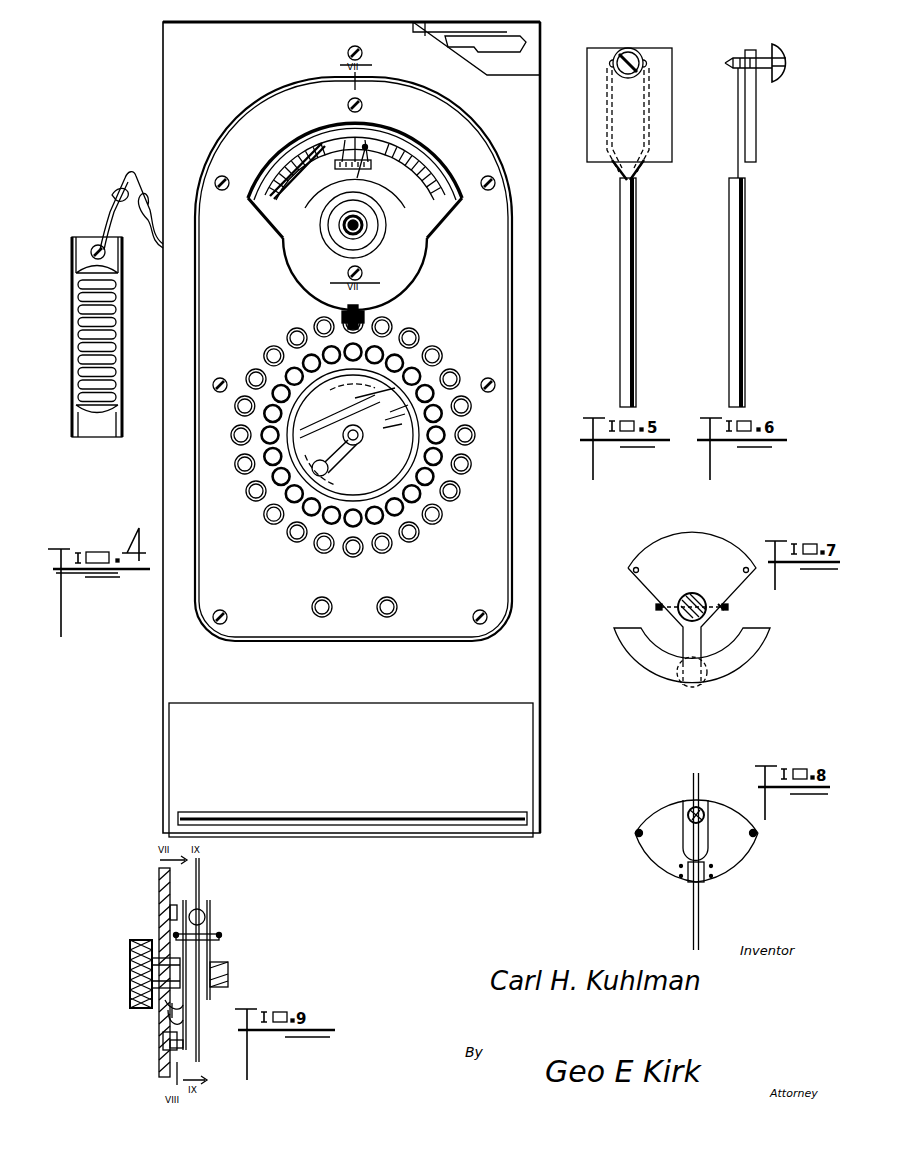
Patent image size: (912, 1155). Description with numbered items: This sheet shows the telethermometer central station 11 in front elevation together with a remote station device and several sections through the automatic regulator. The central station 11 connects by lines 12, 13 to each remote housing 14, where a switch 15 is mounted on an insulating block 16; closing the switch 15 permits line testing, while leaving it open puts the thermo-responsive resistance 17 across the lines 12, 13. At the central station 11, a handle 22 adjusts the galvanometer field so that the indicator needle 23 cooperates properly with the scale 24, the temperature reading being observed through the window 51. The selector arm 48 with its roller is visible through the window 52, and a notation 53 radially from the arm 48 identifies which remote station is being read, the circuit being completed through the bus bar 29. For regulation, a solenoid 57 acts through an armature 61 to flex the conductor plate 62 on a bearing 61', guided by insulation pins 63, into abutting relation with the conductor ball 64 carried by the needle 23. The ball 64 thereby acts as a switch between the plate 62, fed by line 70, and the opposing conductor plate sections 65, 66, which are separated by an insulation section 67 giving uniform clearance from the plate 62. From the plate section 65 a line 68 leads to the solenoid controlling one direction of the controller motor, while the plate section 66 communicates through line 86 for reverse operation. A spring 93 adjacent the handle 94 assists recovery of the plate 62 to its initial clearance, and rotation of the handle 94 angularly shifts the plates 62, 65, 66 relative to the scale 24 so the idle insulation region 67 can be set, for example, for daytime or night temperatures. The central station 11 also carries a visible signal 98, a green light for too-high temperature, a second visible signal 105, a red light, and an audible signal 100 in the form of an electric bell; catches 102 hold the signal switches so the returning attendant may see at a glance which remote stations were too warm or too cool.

In FIG. 4, the central station 11 is at (178, 612).
In FIG. 4, the line 12 is at (133, 172).
In FIG. 4, the line 13 is at (112, 195).
In FIG. 4, the housing 14 is at (124, 308).
In FIG. 4, the switch 15 is at (97, 250).
In FIG. 5, the switch 15 is at (636, 49).
In FIG. 6, the switch 15 is at (780, 46).
In FIG. 5, the insulating block 16 is at (657, 150).
In FIG. 6, the insulating block 16 is at (758, 136).
In FIG. 5, the thermo-responsive resistance 17 is at (637, 262).
In FIG. 6, the thermo-responsive resistance 17 is at (746, 242).
In FIG. 4, the handle 22 is at (366, 316).
In FIG. 4, the indicator needle 23 is at (398, 148).
In FIG. 9, the indicator needle 23 is at (200, 886).
In FIG. 4, the scale 24 is at (320, 143).
In FIG. 8, the bus bar 29 is at (692, 921).
In FIG. 4, the arm 48 is at (345, 458).
In FIG. 4, the window 51 is at (437, 225).
In FIG. 9, the window 51 is at (158, 880).
In FIG. 4, the window 52 is at (370, 490).
In FIG. 4, the notation 53 is at (362, 548).
In FIG. 7, the solenoid 57 is at (688, 687).
In FIG. 9, the solenoid 57 is at (163, 1043).
In FIG. 7, the armature 61 is at (692, 658).
In FIG. 9, the armature 61 is at (200, 975).
In FIG. 7, the bearing 61' is at (735, 619).
In FIG. 7, the conductor plate 62 is at (714, 553).
In FIG. 9, the conductor plate 62 is at (190, 942).
In FIG. 7, the insulation pins 63 is at (746, 570).
In FIG. 8, the insulation pins 63 is at (750, 834).
In FIG. 9, the insulation pins 63 is at (222, 930).
In FIG. 8, the conductor ball 64 is at (690, 795).
In FIG. 9, the conductor ball 64 is at (207, 912).
In FIG. 8, the conductor plate section 65 is at (660, 814).
In FIG. 8, the conductor plate section 66 is at (730, 818).
In FIG. 9, the conductor plate section 66 is at (212, 922).
In FIG. 8, the insulation section 67 is at (702, 800).
In FIG. 8, the line 68 is at (662, 872).
In FIG. 7, the line 70 is at (732, 590).
In FIG. 8, the line 86 is at (735, 870).
In FIG. 9, the spring 93 is at (164, 1020).
In FIG. 4, the handle 94 is at (333, 240).
In FIG. 9, the handle 94 is at (132, 950).
In FIG. 4, the visible signal 98 is at (445, 452).
In FIG. 4, the audible signal 100 is at (474, 50).
In FIG. 4, the catch 102 is at (330, 615).
In FIG. 4, the visible signal 105 is at (432, 530).